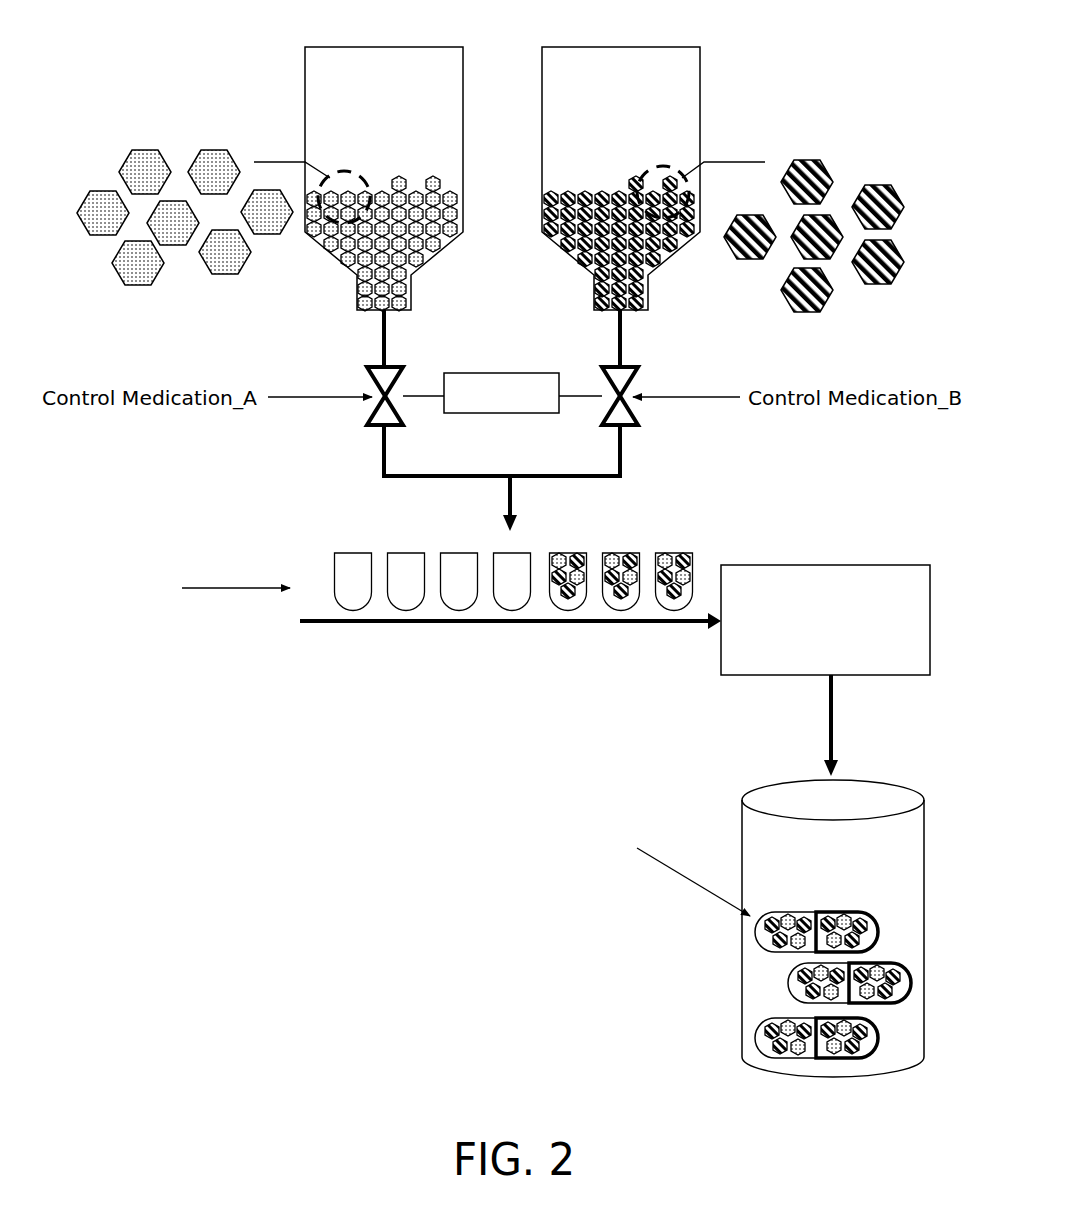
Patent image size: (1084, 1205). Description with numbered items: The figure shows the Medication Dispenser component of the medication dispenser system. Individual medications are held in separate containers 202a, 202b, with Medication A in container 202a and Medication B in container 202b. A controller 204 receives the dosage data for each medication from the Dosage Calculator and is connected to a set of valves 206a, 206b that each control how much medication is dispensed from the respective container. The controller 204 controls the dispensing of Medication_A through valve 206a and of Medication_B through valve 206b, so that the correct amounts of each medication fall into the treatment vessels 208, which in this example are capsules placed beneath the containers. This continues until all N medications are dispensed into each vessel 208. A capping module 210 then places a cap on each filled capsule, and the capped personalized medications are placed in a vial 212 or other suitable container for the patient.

The container 202a is at (305, 90).
The container 202b is at (700, 85).
The controller 204 is at (516, 365).
The valve 206a is at (410, 364).
The valve 206b is at (648, 364).
The treatment vessel 208 is at (335, 556).
The capping module 210 is at (840, 562).
The vial 212 is at (742, 962).